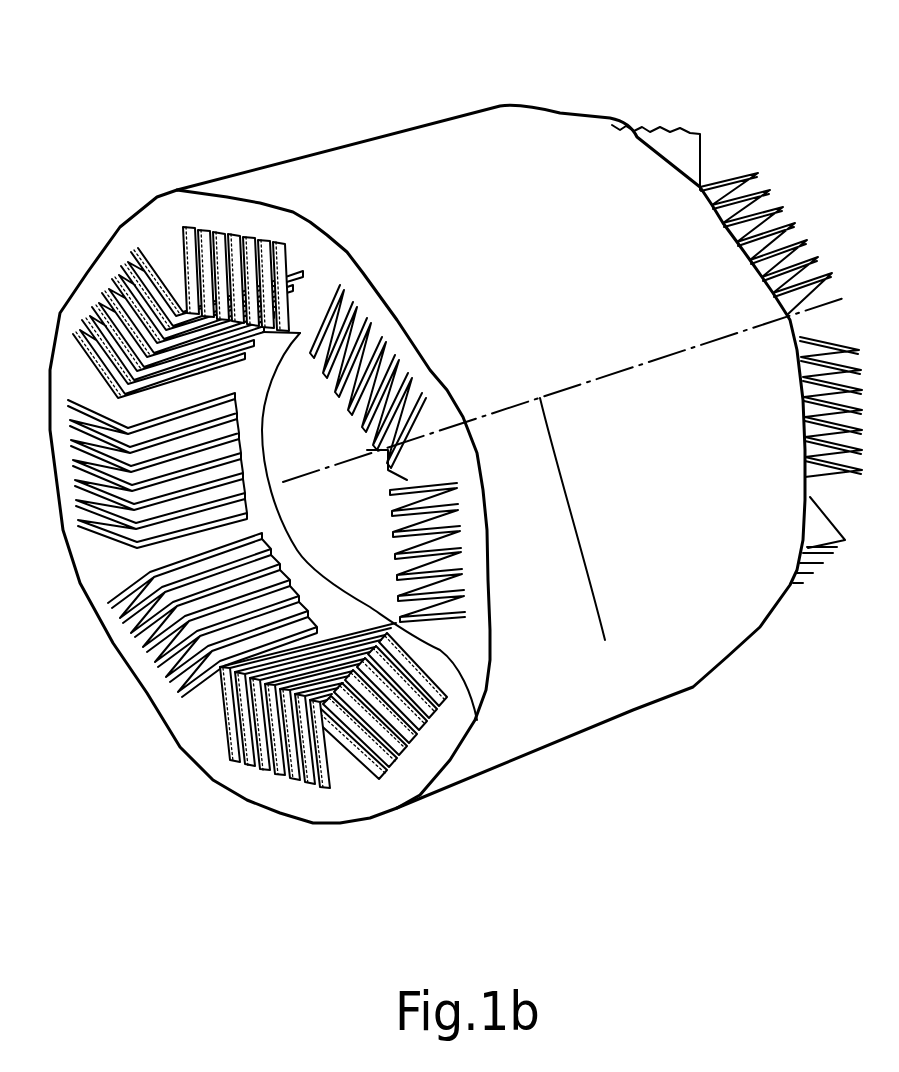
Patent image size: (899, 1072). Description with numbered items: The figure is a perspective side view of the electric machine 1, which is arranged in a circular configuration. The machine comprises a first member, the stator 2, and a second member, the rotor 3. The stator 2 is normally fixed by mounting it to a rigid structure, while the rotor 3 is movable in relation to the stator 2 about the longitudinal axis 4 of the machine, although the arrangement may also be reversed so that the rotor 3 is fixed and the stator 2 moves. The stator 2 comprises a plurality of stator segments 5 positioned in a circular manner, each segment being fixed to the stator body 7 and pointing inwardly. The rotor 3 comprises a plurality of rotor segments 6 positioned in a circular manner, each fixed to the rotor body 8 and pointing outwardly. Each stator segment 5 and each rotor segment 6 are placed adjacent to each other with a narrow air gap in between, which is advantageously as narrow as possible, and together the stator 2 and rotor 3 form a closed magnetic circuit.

The electric machine 1 is at (462, 468).
The stator 2 is at (340, 143).
The rotor 3 is at (795, 195).
The longitudinal axis 4 is at (605, 640).
The stator segment 5 is at (310, 787).
The rotor segment 6 is at (693, 158).
The stator body 7 is at (478, 658).
The rotor body 8 is at (478, 660).